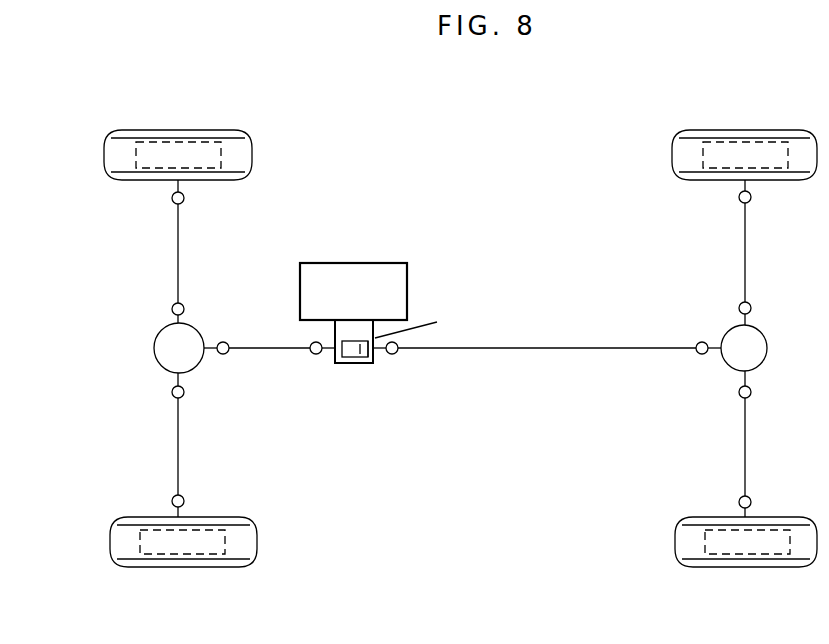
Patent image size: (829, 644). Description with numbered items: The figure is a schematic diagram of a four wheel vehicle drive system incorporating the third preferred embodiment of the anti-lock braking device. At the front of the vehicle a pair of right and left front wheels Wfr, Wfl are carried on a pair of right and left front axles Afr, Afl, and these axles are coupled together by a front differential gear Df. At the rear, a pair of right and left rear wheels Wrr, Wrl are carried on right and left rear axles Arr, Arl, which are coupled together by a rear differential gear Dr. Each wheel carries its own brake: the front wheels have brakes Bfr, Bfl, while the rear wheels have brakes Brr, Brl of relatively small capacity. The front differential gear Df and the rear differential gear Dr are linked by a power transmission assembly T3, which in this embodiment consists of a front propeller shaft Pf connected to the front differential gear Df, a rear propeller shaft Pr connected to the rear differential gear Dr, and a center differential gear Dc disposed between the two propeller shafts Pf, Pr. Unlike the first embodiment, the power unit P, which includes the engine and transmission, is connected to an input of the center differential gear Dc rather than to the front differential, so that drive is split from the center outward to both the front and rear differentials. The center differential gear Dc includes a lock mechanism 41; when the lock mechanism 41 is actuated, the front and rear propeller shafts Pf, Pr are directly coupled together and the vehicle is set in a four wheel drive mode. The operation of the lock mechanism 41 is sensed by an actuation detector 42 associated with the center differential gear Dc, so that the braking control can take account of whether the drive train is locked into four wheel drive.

The right front wheel Wfr is at (130, 135).
The brake Bfr is at (204, 140).
The right front axle Afr is at (177, 271).
The left front axle Afl is at (177, 475).
The left front wheel Wfl is at (140, 566).
The brake Bfl is at (217, 556).
The front differential gear Df is at (161, 368).
The front propeller shaft Pf is at (266, 353).
The power unit P is at (360, 304).
The center differential gear Dc is at (340, 365).
The lock mechanism 41 is at (355, 357).
The actuation detector 42 is at (368, 367).
The power transmission assembly T3 is at (442, 388).
The rear propeller shaft Pr is at (581, 352).
The rear differential gear Dr is at (757, 328).
The right rear axle Arr is at (746, 244).
The left rear axle Arl is at (746, 437).
The right rear wheel Wrr is at (704, 134).
The brake Brr is at (770, 140).
The left rear wheel Wrl is at (715, 567).
The brake Brl is at (775, 557).